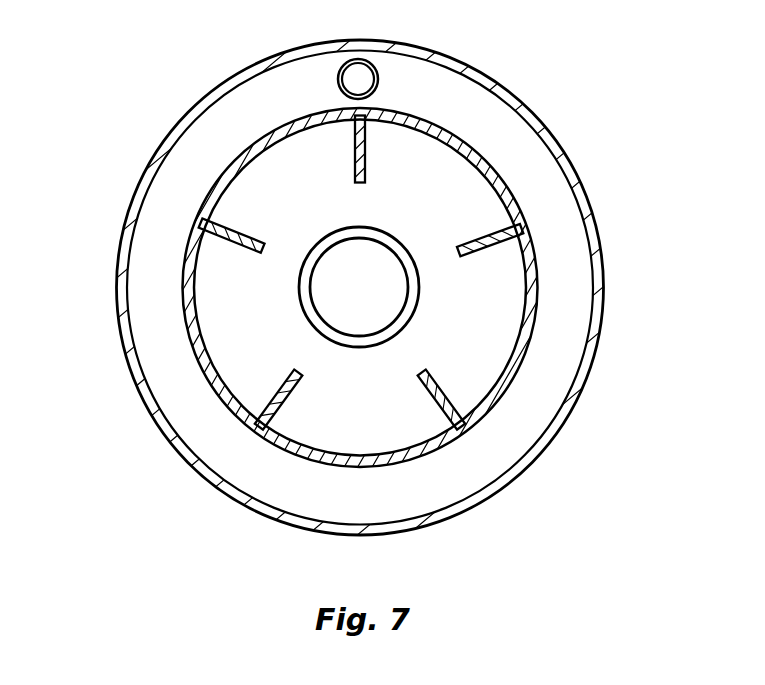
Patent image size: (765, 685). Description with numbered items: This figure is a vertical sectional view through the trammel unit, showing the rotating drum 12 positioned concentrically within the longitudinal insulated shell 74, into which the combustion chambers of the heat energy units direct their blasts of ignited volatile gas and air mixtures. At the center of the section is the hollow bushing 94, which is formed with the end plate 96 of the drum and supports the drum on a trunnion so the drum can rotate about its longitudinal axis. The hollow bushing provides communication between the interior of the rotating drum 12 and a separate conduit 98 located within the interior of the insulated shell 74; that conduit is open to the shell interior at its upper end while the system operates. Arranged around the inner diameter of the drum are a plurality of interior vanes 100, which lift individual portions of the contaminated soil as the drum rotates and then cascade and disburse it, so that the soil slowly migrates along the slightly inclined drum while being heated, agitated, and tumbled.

The insulated shell 74 is at (200, 101).
The rotating drum 12 is at (490, 406).
The radial vanes 100 is at (437, 378).
The conduit 98 is at (378, 79).
The hollow bushing 94 is at (225, 285).
The end plate 96 is at (422, 223).